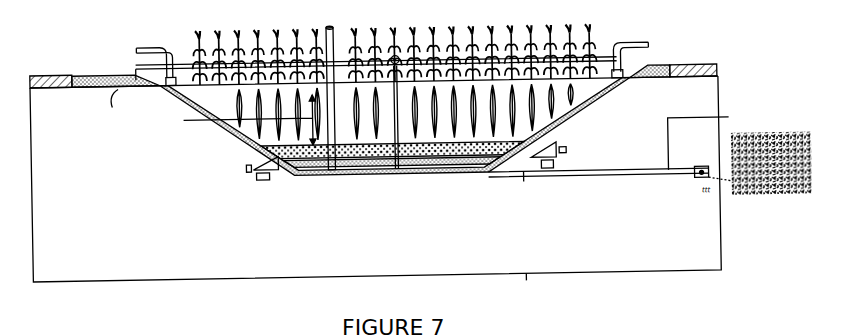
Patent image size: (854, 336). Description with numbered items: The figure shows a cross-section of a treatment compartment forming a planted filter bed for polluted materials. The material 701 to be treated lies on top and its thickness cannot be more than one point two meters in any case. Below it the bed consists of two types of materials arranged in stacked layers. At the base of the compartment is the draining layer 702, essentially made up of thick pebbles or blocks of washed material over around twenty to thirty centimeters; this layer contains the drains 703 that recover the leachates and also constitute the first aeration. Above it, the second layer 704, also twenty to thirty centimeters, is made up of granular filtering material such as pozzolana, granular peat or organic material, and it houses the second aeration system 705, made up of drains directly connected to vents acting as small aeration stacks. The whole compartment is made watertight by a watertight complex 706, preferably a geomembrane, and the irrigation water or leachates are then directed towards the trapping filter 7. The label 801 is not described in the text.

The material to be treated 701 is at (183, 120).
The draining layer 702 is at (462, 166).
The drains 703 is at (608, 172).
The second layer 704 is at (582, 105).
The second aeration system 705 is at (643, 40).
The watertight complex 706 is at (676, 80).
The trapping filter 7 is at (752, 193).
The reference label 801 is at (681, 328).